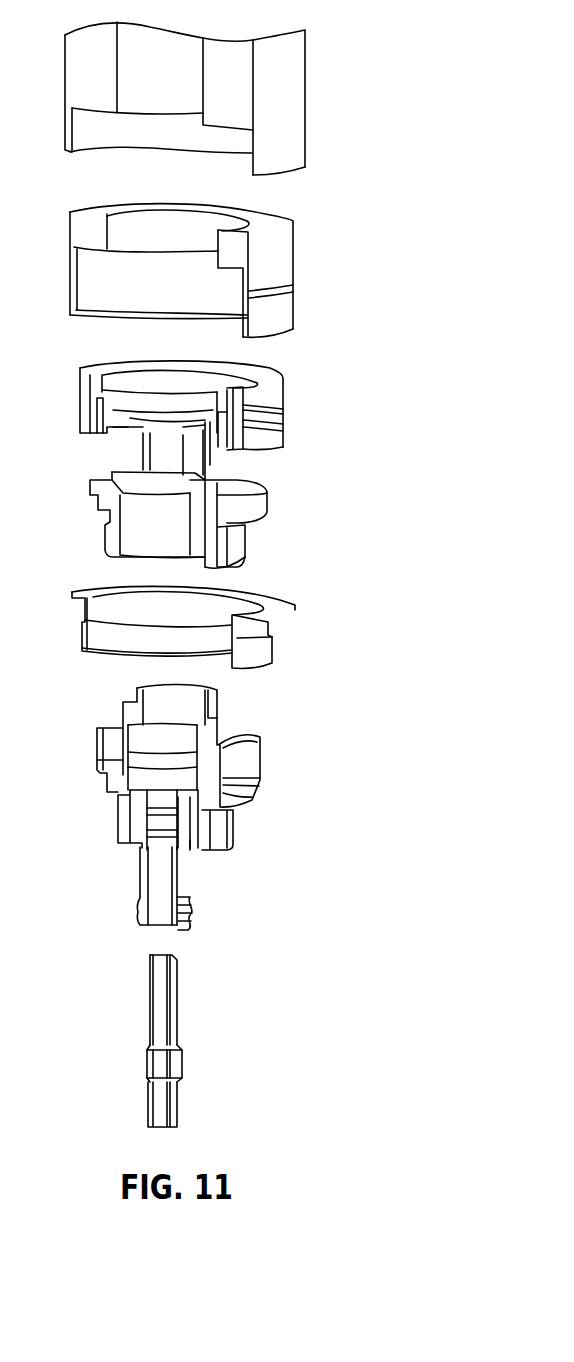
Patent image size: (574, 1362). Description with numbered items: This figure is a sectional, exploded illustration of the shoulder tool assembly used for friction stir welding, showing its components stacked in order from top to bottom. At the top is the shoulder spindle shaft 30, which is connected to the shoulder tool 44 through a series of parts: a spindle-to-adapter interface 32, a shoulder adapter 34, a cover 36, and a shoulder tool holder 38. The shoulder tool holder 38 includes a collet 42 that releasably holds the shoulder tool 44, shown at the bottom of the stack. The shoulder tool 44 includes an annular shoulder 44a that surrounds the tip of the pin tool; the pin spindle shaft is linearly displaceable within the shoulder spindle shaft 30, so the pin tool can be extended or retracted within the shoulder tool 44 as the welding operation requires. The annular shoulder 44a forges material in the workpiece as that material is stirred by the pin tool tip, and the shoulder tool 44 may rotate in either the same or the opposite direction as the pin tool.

The shoulder spindle shaft 30 is at (280, 105).
The spindle-to-adapter interface 32 is at (277, 258).
The shoulder adapter 34 is at (327, 362).
The cover 36 is at (257, 655).
The shoulder tool holder 38 is at (242, 762).
The collet 42 is at (162, 888).
The shoulder tool 44 is at (172, 1010).
The annular shoulder 44a is at (146, 1132).